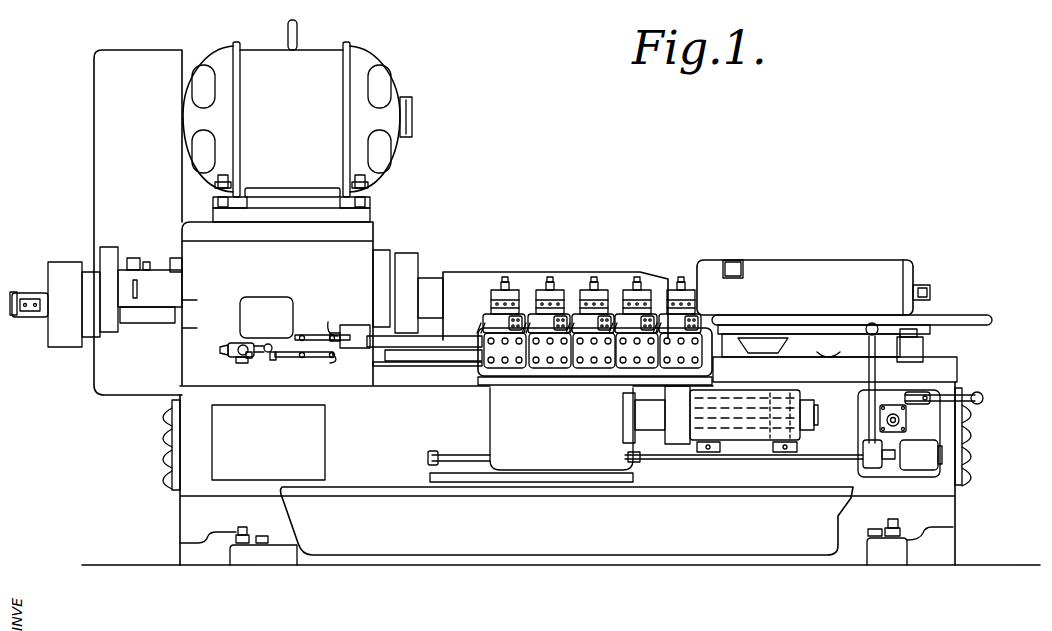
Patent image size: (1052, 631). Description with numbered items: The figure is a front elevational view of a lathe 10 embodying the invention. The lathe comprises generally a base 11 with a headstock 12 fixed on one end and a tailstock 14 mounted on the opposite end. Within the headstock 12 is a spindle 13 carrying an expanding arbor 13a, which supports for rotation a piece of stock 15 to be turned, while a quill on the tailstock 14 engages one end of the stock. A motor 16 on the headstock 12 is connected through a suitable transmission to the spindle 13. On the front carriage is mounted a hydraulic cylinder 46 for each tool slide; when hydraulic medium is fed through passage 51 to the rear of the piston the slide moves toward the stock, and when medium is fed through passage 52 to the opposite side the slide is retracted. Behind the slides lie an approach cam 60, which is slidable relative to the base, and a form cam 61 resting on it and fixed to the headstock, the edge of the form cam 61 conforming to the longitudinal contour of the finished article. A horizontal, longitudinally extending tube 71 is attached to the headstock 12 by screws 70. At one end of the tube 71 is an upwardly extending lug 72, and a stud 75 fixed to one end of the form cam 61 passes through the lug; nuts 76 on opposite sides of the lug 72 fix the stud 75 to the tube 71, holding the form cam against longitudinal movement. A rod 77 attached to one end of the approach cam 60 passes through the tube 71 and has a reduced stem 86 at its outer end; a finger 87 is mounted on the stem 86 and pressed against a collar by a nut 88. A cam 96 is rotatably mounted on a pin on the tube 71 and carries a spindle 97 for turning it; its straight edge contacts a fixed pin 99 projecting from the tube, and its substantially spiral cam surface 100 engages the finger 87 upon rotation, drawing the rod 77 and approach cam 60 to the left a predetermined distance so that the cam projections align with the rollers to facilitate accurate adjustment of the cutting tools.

The lathe 10 is at (742, 212).
The base 11 is at (603, 542).
The headstock 12 is at (345, 276).
The spindle 13 is at (143, 316).
The expanding arbor 13a is at (434, 296).
The tailstock 14 is at (848, 280).
The stock 15 is at (577, 329).
The motor 16 is at (362, 62).
The hydraulic cylinder 46 is at (510, 365).
The passage 51 is at (583, 360).
The passage 52 is at (633, 362).
The approach cam 60 is at (455, 348).
The form cam 61 is at (455, 338).
The screws 70 is at (332, 360).
The tube 71 is at (290, 352).
The lug 72 is at (356, 336).
The stud 75 is at (330, 332).
The nuts 76 is at (343, 333).
The rod 77 is at (408, 352).
The reduced stem 86 is at (221, 351).
The finger 87 is at (240, 342).
The nut 88 is at (238, 356).
The cam 96 is at (264, 347).
The spindle 97 is at (272, 358).
The fixed pin 99 is at (249, 356).
The spiral cam surface 100 is at (260, 345).